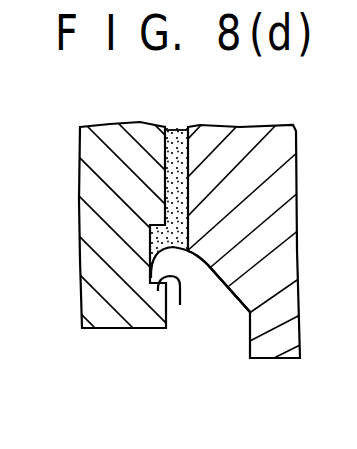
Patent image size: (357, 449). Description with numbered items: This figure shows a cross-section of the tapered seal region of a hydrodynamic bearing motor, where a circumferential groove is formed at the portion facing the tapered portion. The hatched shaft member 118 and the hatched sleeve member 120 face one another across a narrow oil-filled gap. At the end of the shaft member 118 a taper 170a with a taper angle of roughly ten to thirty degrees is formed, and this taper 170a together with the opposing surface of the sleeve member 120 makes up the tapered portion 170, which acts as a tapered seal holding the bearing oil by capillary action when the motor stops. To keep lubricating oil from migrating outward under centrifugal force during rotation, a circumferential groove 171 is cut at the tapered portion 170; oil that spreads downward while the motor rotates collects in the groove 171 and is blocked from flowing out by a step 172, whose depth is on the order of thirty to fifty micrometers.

The shaft member 118 is at (242, 148).
The sleeve member 120 is at (90, 221).
The tapered portion 170 is at (219, 306).
The taper 170a is at (236, 297).
The circumferential groove 171 is at (153, 251).
The step 172 is at (180, 305).